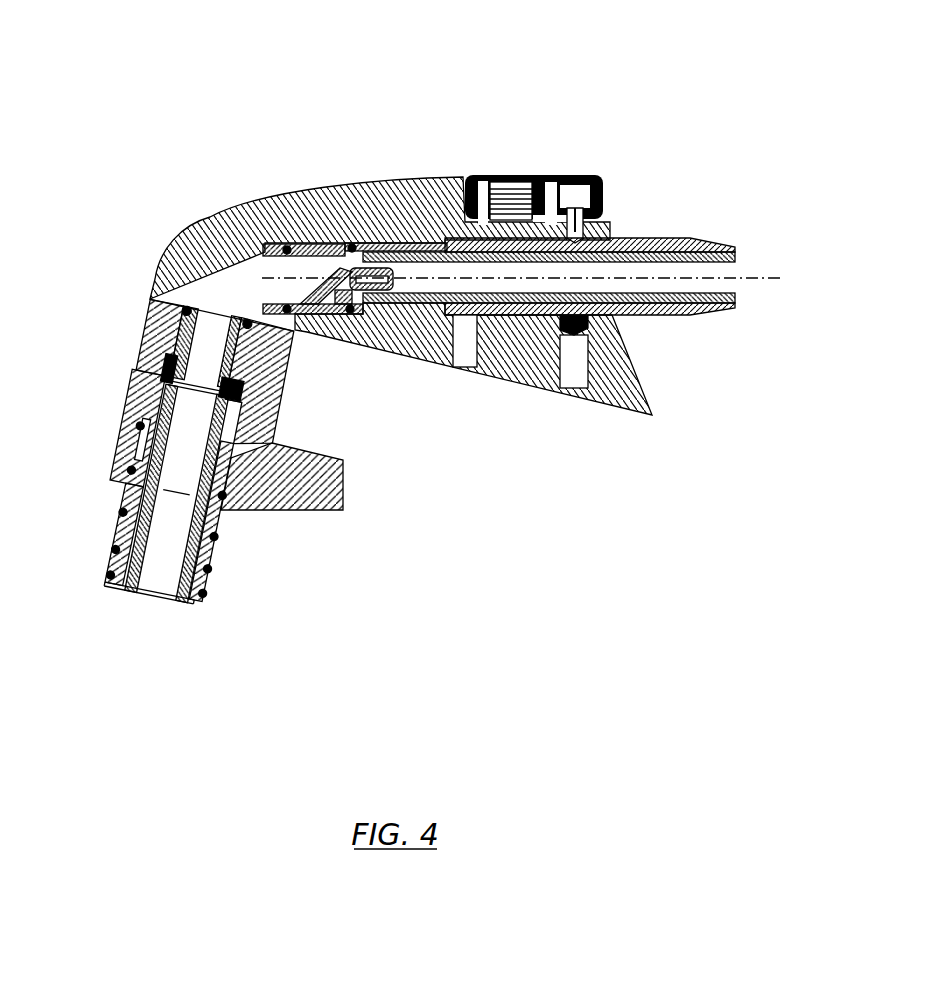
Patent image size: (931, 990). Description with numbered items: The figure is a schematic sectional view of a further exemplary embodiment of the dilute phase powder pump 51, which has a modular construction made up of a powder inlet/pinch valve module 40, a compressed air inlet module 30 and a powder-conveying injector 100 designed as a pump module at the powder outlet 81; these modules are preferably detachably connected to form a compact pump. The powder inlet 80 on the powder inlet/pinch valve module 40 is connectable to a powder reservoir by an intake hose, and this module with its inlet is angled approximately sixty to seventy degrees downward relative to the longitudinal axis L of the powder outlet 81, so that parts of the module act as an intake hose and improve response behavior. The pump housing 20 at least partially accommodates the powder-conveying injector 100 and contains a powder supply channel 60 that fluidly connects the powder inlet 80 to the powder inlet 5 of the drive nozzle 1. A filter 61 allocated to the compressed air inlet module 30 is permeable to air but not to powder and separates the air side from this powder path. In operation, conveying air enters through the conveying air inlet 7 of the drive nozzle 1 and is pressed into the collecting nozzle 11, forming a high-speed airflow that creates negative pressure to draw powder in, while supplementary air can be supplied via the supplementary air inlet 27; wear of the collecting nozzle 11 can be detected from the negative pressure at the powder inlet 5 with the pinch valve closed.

The powder-conveying injector 100 is at (595, 122).
The dilute phase powder pump 51 is at (80, 105).
The powder inlet of the drive nozzle 5 is at (260, 260).
The conveying air inlet 7 is at (325, 330).
The drive nozzle 1 is at (370, 310).
The collecting nozzle 11 is at (417, 310).
The powder outlet 81 is at (662, 248).
The longitudinal axis L is at (715, 280).
The pump housing 20 is at (515, 408).
The supplementary air inlet 27 is at (566, 368).
The compressed air inlet module 30 is at (174, 324).
The filter 61 is at (161, 293).
The powder inlet/pinch valve module 40 is at (146, 552).
The powder supply channel 60 is at (172, 507).
The powder inlet 80 is at (118, 659).